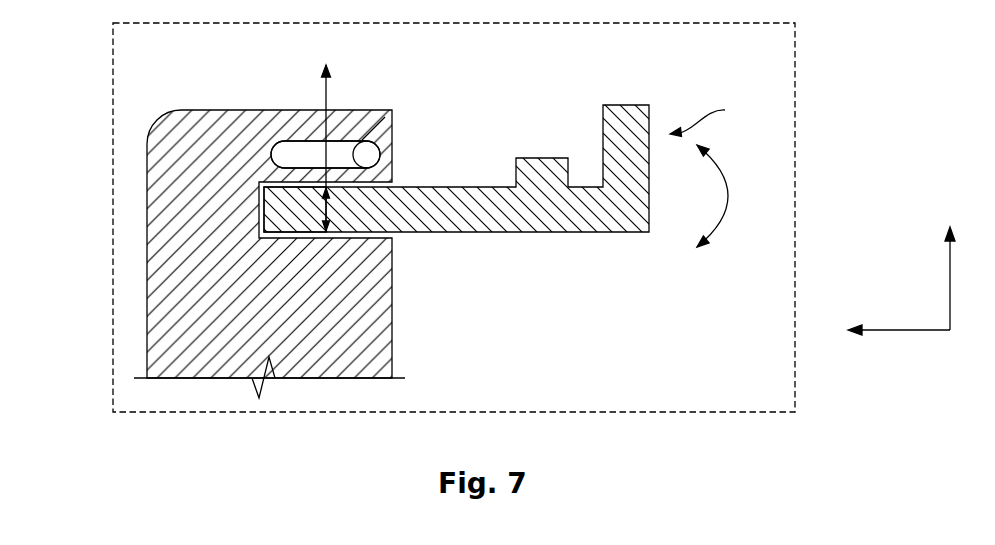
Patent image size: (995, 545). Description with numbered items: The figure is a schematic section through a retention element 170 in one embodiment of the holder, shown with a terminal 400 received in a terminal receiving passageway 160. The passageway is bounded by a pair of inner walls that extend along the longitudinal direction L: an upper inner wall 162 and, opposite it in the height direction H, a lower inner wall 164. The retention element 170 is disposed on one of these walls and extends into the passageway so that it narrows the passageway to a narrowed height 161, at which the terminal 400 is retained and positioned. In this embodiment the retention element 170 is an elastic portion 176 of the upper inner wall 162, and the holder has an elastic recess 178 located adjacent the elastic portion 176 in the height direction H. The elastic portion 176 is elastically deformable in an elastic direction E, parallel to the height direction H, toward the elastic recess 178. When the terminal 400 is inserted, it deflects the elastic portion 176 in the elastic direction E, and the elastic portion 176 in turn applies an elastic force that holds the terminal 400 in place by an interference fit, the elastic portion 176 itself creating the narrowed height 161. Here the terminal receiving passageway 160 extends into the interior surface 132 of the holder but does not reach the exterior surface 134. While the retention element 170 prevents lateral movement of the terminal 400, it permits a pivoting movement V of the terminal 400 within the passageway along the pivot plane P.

The interior surface 132 is at (393, 275).
The exterior surface 134 is at (160, 172).
The terminal receiving passageway 160 is at (403, 182).
The narrowed height 161 is at (327, 208).
The upper inner wall 162 is at (267, 175).
The lower inner wall 164 is at (376, 241).
The retention element 170 is at (385, 117).
The elastic portion 176 is at (396, 114).
The elastic recess 178 is at (302, 153).
The terminal 400 is at (721, 118).
The pivot plane P is at (795, 73).
The elastic direction E is at (323, 134).
The pivoting movement V is at (725, 196).
The height direction H is at (950, 265).
The longitudinal direction L is at (888, 334).